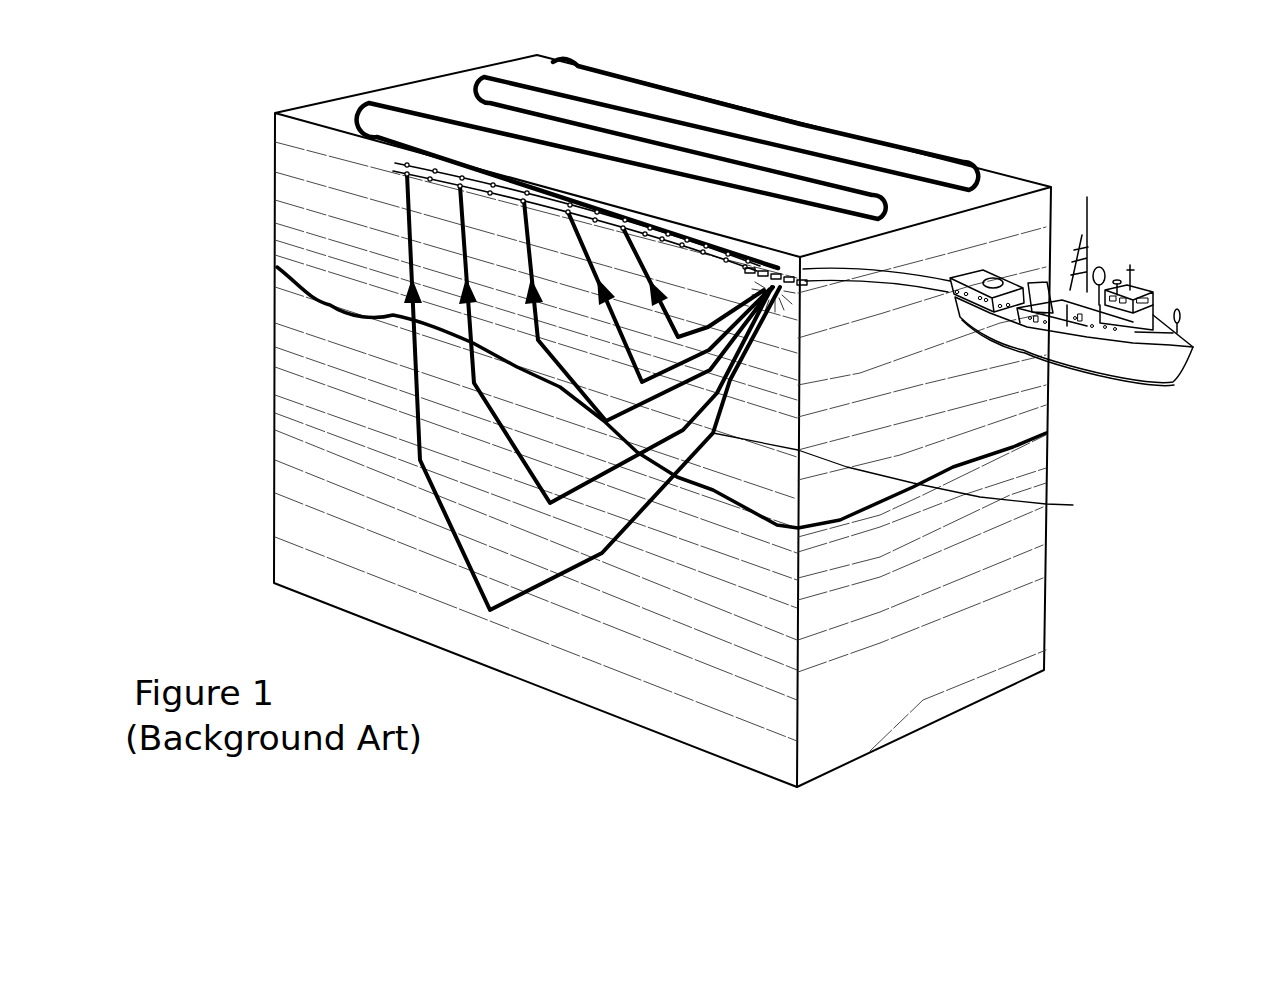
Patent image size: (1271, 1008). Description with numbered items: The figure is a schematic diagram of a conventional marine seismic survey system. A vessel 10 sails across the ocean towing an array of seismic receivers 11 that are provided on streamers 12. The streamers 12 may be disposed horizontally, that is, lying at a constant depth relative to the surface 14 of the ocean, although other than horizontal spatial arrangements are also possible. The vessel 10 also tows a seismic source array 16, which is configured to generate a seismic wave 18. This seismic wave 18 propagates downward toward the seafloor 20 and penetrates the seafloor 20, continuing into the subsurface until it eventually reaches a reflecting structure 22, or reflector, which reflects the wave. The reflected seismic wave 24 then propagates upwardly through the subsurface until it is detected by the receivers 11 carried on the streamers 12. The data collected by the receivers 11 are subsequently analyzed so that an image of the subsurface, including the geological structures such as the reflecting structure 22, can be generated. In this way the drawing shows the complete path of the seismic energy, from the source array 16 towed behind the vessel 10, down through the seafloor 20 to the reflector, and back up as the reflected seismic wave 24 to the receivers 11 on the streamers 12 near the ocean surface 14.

The vessel 10 is at (1158, 281).
The seismic receivers 11 is at (461, 183).
The streamers 12 is at (588, 197).
The surface 14 is at (438, 92).
The seismic source array 16 is at (778, 272).
The seismic wave 18 is at (913, 474).
The seafloor 20 is at (1010, 437).
The reflecting structure 22 is at (370, 433).
The reflected seismic wave 24 is at (412, 360).